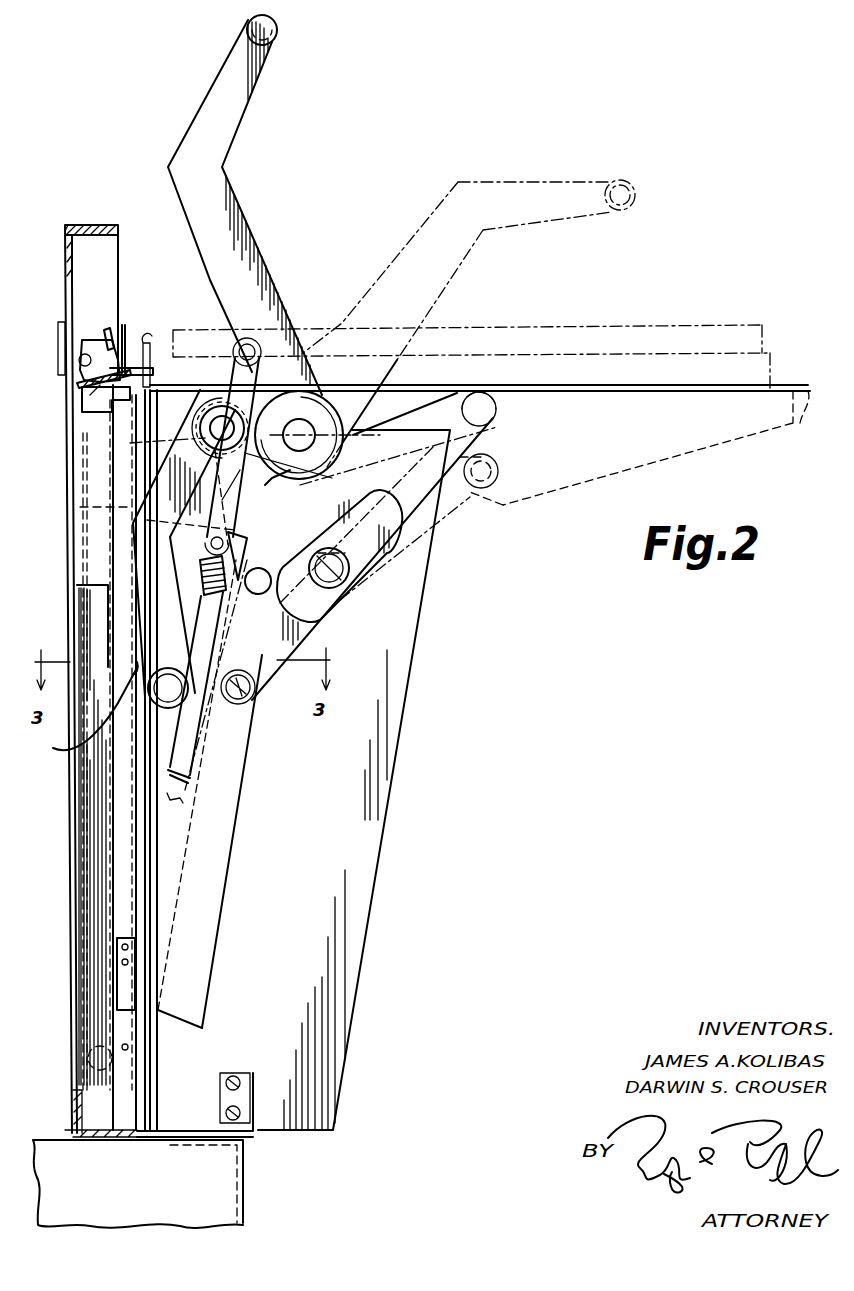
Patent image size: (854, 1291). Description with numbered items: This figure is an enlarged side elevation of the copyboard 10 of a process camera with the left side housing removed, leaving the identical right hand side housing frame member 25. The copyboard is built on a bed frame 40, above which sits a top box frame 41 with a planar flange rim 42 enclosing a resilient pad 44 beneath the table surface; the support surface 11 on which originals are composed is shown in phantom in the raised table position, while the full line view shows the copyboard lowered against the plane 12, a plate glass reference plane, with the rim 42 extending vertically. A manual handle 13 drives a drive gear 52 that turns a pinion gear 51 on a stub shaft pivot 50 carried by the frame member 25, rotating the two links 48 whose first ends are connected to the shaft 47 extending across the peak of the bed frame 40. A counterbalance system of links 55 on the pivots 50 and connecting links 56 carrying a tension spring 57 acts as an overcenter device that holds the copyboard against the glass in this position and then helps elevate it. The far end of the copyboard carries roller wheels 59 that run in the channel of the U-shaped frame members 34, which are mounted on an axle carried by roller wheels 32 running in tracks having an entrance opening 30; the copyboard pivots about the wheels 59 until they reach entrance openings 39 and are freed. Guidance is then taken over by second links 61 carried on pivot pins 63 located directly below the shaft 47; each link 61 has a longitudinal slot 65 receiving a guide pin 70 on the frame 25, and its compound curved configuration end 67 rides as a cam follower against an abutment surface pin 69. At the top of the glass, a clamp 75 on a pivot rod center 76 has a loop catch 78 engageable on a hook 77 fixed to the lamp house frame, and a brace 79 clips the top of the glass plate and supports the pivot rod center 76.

The copyboard 10 is at (468, 638).
The support surface 11 is at (575, 327).
The plane 12 is at (110, 449).
The manual handle 13 is at (252, 118).
The side housing frame member 25 is at (402, 718).
The entrance opening 30 is at (112, 664).
The roller wheels 32 is at (82, 1050).
The frame members 34 is at (97, 400).
The entrance openings 39 is at (58, 750).
The bed frame 40 is at (542, 500).
The top box frame 41 is at (758, 364).
The planar flange rim 42 is at (800, 425).
The resilient pad 44 is at (732, 335).
The shaft 47 is at (498, 410).
The links 48 is at (178, 546).
The stub shaft pivot 50 is at (216, 404).
The pinion gear 51 is at (262, 398).
The drive gear 52 is at (270, 480).
The links 55 is at (233, 418).
The connecting links 56 is at (237, 483).
The tension spring 57 is at (190, 768).
The roller wheels 59 is at (160, 338).
The second links 61 is at (450, 520).
The pivot pins 63 is at (499, 470).
The slot 65 is at (336, 540).
The configuration end 67 is at (323, 512).
The abutment surface pin 69 is at (261, 568).
The pin 70 is at (318, 582).
The clamp 75 is at (125, 342).
The pivot rod center 76 is at (110, 402).
The hook 77 is at (58, 336).
The loop catch 78 is at (108, 345).
The brace 79 is at (80, 381).